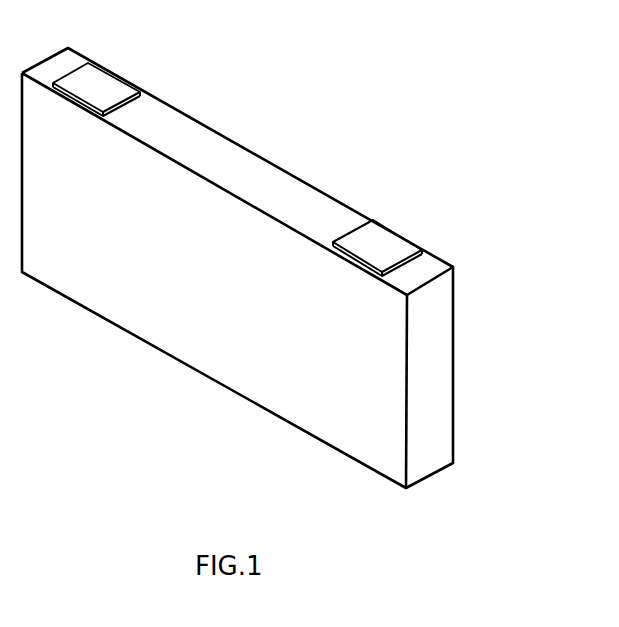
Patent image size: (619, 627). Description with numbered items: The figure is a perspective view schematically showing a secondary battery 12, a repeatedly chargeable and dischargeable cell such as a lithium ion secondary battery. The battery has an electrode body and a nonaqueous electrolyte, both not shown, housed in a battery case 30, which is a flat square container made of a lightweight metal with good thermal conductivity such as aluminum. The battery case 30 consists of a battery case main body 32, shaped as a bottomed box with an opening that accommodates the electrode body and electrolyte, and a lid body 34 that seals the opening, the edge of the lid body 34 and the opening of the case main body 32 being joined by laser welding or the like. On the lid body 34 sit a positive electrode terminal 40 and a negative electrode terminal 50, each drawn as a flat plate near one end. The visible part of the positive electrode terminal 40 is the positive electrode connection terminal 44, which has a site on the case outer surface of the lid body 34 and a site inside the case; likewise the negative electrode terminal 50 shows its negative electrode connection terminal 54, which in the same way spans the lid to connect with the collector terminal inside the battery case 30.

The secondary battery 12 is at (291, 252).
The battery case 30 is at (291, 268).
The battery case main body 32 is at (123, 308).
The lid body 34 is at (237, 158).
The positive electrode terminal 40 is at (124, 68).
The positive electrode connection terminal 44 is at (100, 80).
The negative electrode terminal 50 is at (407, 227).
The negative electrode connection terminal 54 is at (380, 240).